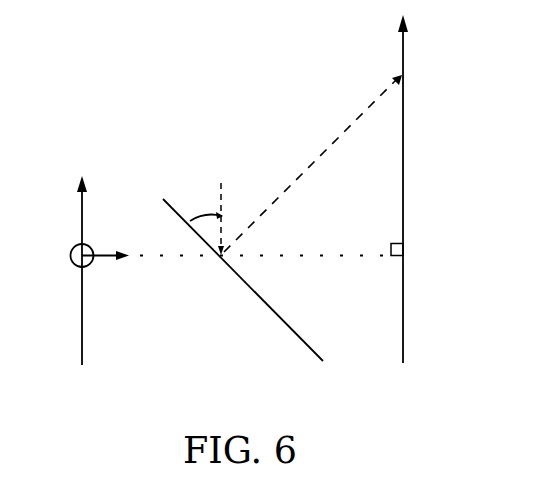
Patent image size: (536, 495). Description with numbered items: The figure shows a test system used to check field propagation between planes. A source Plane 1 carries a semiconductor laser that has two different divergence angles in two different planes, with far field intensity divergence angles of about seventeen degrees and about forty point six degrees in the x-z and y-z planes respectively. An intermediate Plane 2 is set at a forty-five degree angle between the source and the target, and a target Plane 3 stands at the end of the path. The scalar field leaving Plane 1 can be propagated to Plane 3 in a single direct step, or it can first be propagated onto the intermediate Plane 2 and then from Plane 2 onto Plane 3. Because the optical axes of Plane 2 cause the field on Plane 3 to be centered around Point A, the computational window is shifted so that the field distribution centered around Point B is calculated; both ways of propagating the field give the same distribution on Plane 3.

The source Plane 1 is at (89, 276).
The intermediate Plane 2 is at (251, 284).
The target Plane 3 is at (406, 203).
The Point A is at (326, 156).
The Point B is at (409, 251).